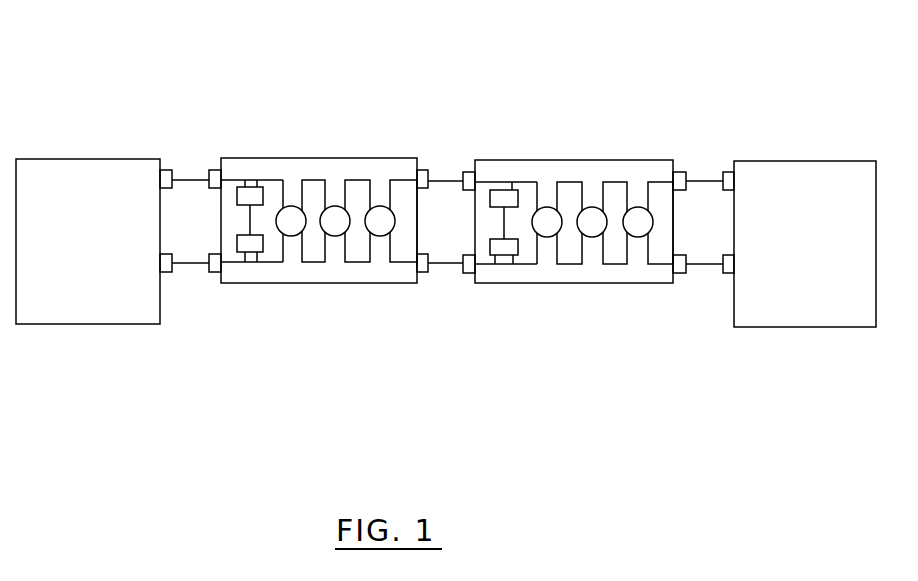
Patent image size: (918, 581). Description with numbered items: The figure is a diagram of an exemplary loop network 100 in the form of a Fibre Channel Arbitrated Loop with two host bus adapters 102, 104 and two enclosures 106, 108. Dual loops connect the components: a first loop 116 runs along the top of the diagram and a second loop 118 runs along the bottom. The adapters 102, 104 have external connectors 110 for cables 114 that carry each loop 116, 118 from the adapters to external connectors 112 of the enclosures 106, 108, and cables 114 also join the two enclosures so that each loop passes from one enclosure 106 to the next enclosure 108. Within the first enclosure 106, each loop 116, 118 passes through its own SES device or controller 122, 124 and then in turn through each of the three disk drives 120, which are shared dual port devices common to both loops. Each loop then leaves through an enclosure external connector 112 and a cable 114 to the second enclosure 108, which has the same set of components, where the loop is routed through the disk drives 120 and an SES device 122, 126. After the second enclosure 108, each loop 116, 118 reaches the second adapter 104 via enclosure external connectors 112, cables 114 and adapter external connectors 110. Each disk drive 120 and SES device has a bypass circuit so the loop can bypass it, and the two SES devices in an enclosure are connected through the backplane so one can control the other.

The loop network 100 is at (122, 48).
The host bus adapter 102 is at (58, 158).
The host bus adapter 104 is at (862, 161).
The enclosure 106 is at (319, 191).
The enclosure 108 is at (591, 160).
The external connector 110 is at (168, 170).
The external connector 112 is at (213, 169).
The cable 114 is at (187, 179).
The first loop 116 is at (333, 158).
The second loop 118 is at (314, 262).
The disk drive 120 is at (391, 209).
The SES device 122 is at (259, 192).
The SES device 124 is at (252, 243).
The SES device 126 is at (547, 181).